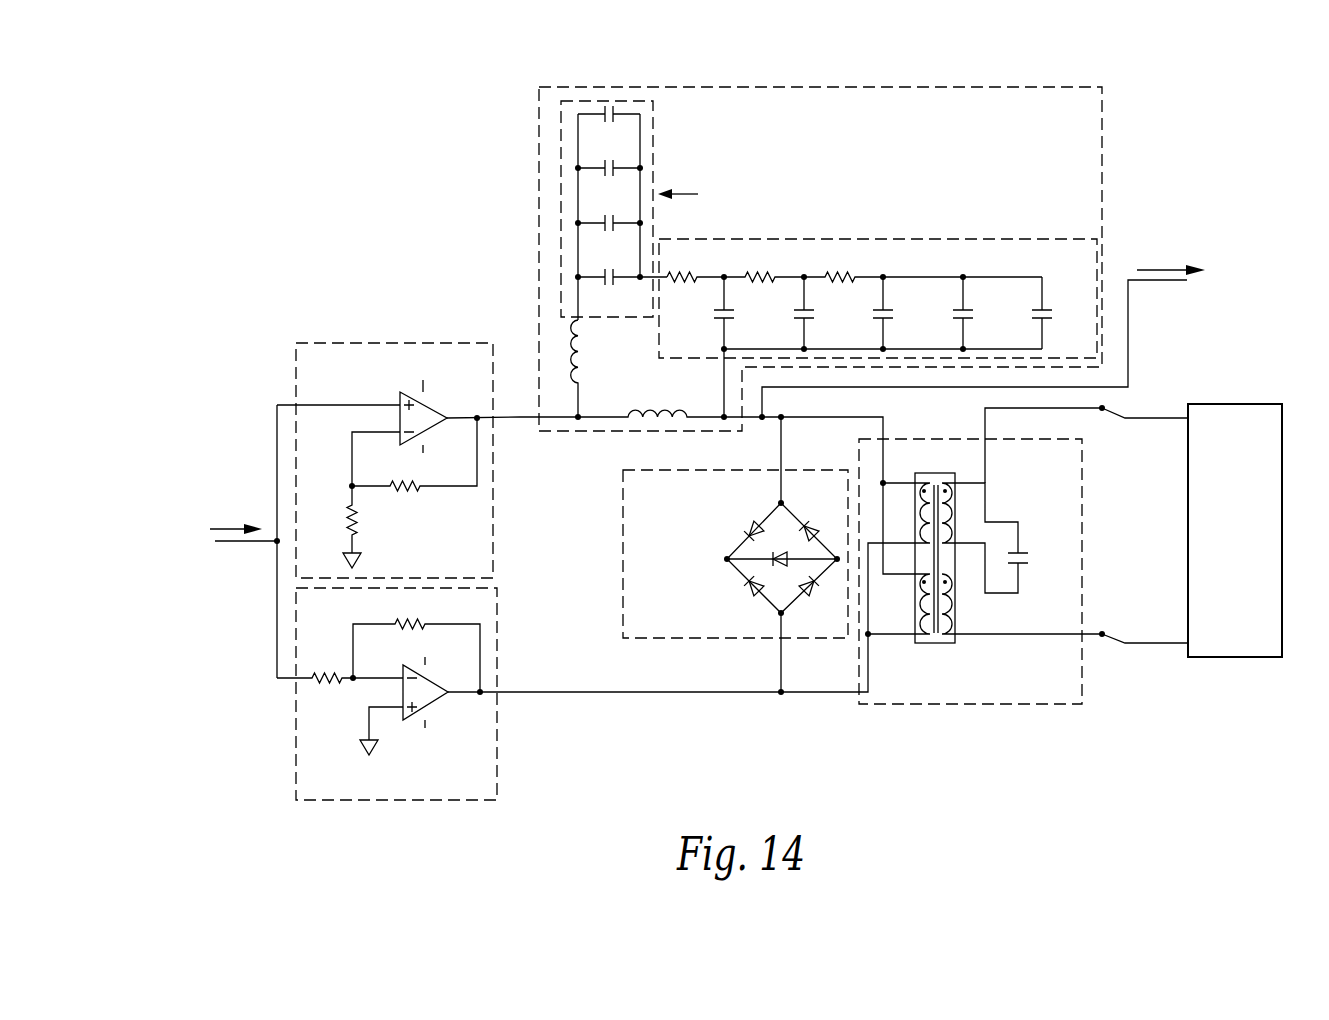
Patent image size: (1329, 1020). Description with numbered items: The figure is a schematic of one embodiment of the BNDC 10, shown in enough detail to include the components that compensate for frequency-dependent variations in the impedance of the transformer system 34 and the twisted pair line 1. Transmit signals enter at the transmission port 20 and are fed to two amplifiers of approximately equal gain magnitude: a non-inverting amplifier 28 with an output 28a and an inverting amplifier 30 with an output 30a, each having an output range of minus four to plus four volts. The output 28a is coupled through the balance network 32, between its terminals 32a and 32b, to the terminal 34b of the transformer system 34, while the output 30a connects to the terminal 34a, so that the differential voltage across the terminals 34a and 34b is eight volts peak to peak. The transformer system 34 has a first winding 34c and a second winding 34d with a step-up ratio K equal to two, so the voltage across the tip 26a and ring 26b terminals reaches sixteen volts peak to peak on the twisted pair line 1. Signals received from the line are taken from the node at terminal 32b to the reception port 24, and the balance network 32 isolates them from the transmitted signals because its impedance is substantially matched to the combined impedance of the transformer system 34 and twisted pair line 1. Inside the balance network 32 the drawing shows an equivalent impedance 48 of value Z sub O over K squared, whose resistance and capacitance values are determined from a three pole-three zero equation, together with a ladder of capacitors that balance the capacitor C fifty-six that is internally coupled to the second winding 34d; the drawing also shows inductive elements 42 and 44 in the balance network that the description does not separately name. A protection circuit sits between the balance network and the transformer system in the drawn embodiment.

The BNDC 10 is at (1220, 104).
The twisted pair line 1 is at (1236, 403).
The transmission port 20 is at (243, 543).
The reception port 24 is at (1128, 330).
The tip terminal 26a is at (1102, 410).
The ring terminal 26b is at (1104, 631).
The non-inverting amplifier 28 is at (394, 342).
The output of non-inverting amplifier 28a is at (511, 420).
The inverting amplifier 30 is at (400, 801).
The output of inverting amplifier 30a is at (560, 693).
The balance network 32 is at (826, 86).
The balance network first terminal 32a is at (526, 416).
The balance network second terminal 32b is at (747, 432).
The transformer system 34 is at (1005, 705).
The transformer system first terminal 34a is at (842, 700).
The transformer system second terminal 34b is at (876, 417).
The first winding 34c is at (922, 510).
The second winding 34d is at (948, 505).
The inductor 120 uH 42 is at (635, 428).
The inductor 0.56 uH 44 is at (572, 348).
The equivalent impedance 48 is at (927, 238).